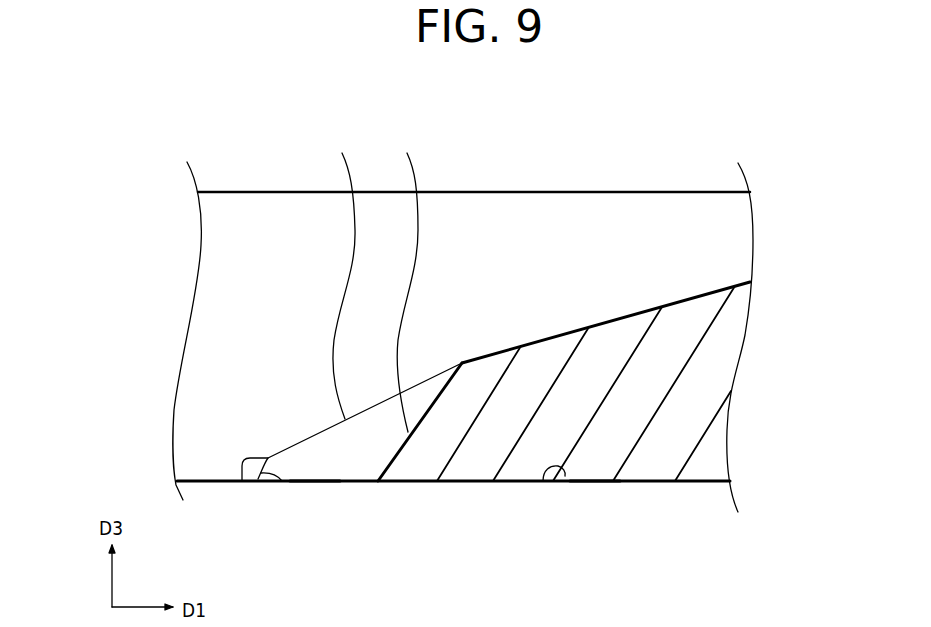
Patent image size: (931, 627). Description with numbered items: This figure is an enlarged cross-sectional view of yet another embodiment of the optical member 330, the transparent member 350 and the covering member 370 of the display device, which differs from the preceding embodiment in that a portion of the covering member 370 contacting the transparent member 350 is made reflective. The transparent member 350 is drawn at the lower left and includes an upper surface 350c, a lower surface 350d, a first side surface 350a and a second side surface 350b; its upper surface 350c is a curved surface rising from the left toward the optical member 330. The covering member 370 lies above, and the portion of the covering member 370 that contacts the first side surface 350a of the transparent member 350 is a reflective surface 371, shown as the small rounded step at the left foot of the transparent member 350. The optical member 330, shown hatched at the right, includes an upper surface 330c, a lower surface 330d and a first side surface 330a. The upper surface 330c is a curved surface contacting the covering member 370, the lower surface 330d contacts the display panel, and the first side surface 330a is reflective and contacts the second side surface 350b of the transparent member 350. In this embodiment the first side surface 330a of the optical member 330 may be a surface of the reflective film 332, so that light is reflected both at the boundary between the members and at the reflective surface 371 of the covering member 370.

The covering member 370 is at (277, 226).
The transparent member 350 is at (357, 466).
The first side surface of the transparent member 350a is at (281, 481).
The second side surface of the transparent member 350b is at (406, 282).
The upper surface of the transparent member 350c is at (344, 275).
The lower surface of the transparent member 350d is at (312, 481).
The reflective surface 371 is at (242, 481).
The optical member 330 is at (613, 357).
The first side surface of the optical member 330a is at (425, 416).
The upper surface of the optical member 330c is at (545, 340).
The lower surface of the optical member 330d is at (593, 483).
The reflective film 332 is at (543, 481).